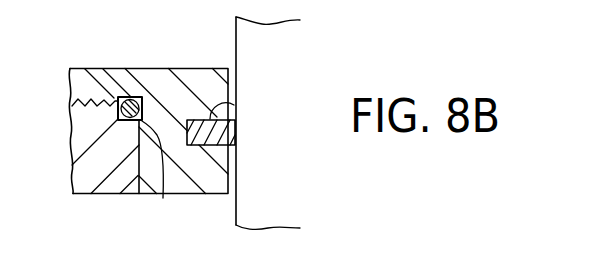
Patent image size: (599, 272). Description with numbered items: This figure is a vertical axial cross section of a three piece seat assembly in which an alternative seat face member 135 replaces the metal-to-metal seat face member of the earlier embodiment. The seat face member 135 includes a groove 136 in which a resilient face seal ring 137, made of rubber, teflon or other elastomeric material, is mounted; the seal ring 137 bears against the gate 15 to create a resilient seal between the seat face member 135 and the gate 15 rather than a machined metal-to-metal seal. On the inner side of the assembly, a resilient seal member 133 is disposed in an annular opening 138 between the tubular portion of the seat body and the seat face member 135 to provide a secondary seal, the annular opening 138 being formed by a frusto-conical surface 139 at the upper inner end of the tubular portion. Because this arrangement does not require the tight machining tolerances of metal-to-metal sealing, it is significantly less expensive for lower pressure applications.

The gate 15 is at (236, 46).
The resilient seal member 133 is at (103, 69).
The alternative seat face member 135 is at (125, 98).
The groove 136 is at (234, 104).
The resilient face seal ring 137 is at (235, 135).
The annular opening 138 is at (145, 119).
The frusto-conical surface 139 is at (171, 174).